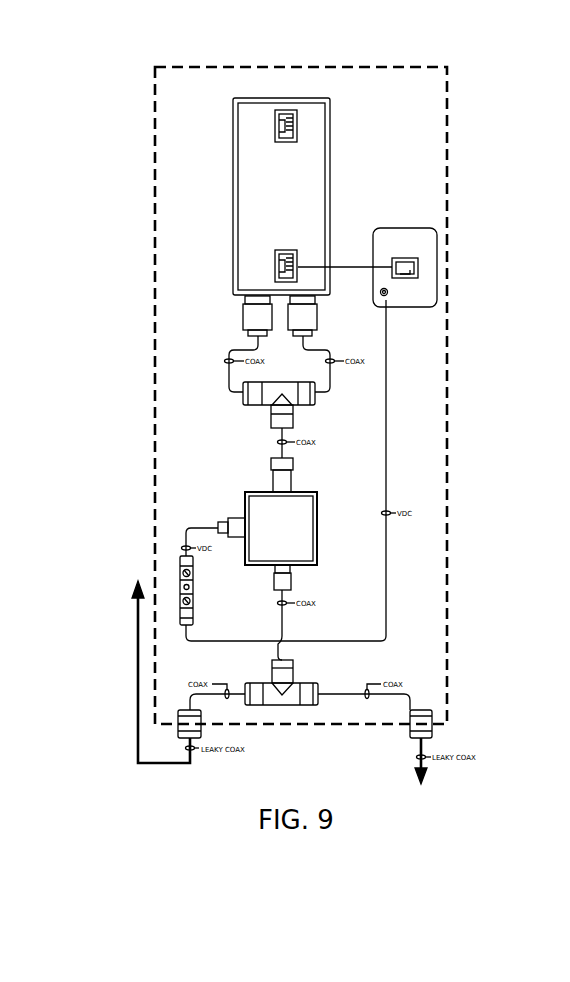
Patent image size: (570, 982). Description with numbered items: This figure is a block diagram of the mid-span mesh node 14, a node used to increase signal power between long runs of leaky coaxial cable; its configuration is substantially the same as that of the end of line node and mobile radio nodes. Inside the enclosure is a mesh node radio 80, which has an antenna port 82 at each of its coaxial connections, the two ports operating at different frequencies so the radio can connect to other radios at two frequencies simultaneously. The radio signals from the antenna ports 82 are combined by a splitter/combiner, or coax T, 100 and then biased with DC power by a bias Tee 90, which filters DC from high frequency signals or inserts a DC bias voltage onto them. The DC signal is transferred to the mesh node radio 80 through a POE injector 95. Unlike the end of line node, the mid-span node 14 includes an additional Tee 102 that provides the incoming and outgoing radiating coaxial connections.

The mid-span mesh node 14 is at (461, 99).
The mesh node radio 80 is at (295, 165).
The antenna port 82 is at (243, 318).
The POE injector 95 is at (426, 251).
The splitter/combiner (coax T) 100 is at (297, 406).
The bias Tee 90 is at (277, 540).
The additional Tee 102 is at (302, 700).